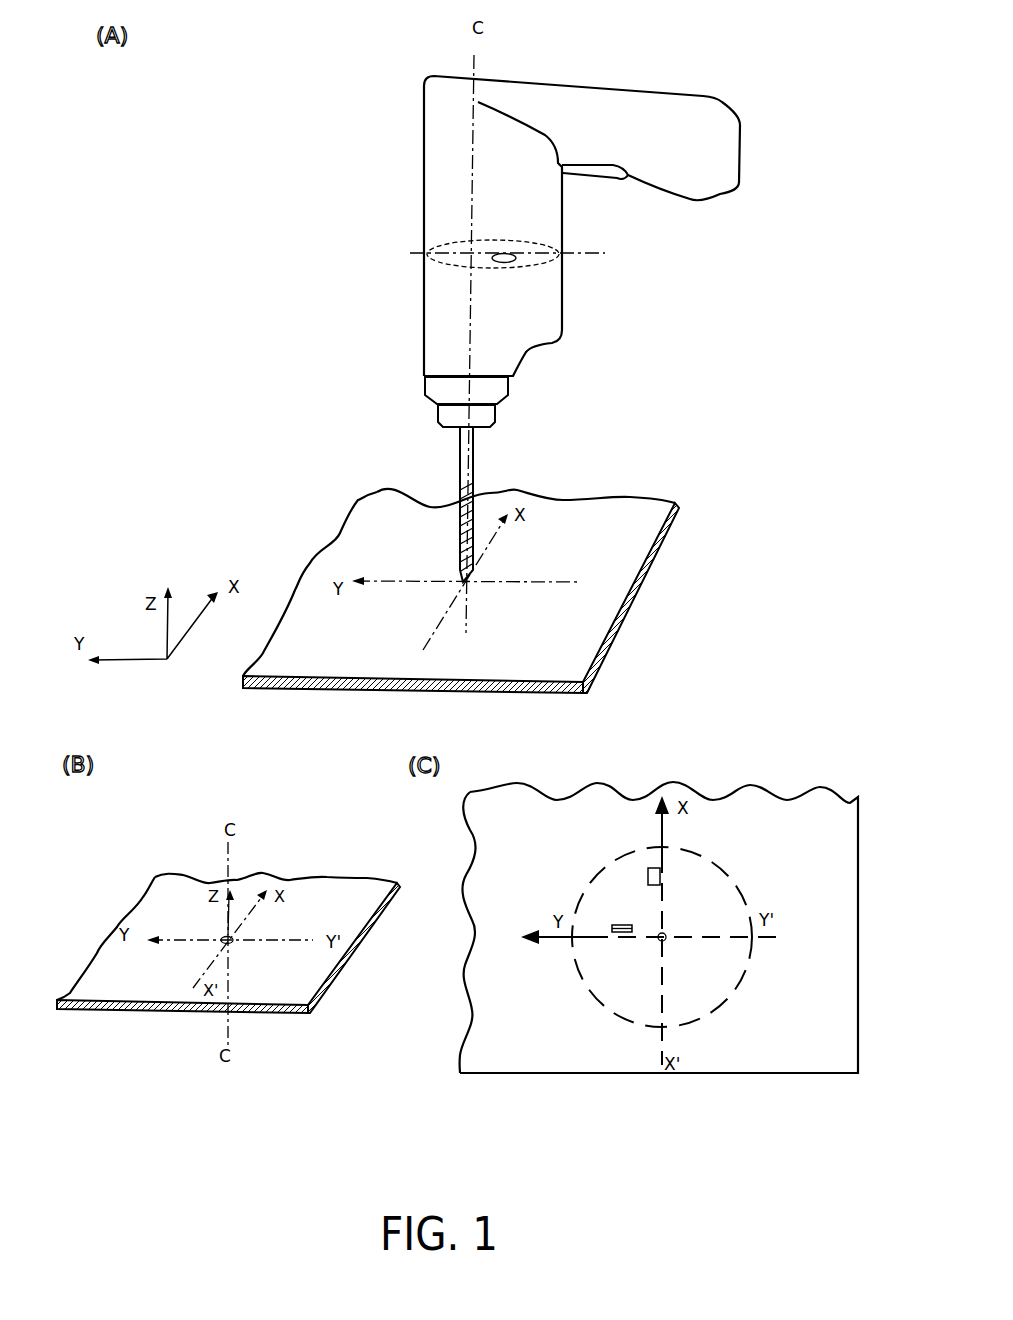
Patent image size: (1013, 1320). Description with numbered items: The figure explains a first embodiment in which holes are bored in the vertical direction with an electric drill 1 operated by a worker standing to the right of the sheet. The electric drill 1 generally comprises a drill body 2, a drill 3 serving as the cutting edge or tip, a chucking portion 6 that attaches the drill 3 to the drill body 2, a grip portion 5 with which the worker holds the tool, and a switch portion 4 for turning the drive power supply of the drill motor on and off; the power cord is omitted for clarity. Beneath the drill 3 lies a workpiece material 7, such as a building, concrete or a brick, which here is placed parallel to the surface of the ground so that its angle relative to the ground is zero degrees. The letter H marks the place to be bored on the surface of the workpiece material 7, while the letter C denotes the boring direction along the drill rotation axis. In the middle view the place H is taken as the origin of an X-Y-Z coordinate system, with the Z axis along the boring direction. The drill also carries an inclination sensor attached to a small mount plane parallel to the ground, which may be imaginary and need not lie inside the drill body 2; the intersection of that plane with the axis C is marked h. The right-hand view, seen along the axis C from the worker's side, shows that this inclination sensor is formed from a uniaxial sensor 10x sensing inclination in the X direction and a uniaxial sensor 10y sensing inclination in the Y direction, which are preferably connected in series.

The electric drill 1 is at (740, 54).
The drill body 2 is at (424, 147).
The drill 3 is at (475, 450).
The switch portion 4 is at (625, 180).
The grip portion 5 is at (708, 199).
The chucking portion 6 is at (494, 415).
The workpiece material 7 is at (640, 495).
The uniaxial sensor 10x is at (647, 875).
The uniaxial sensor 10y is at (613, 925).
The place to be bored H is at (220, 938).